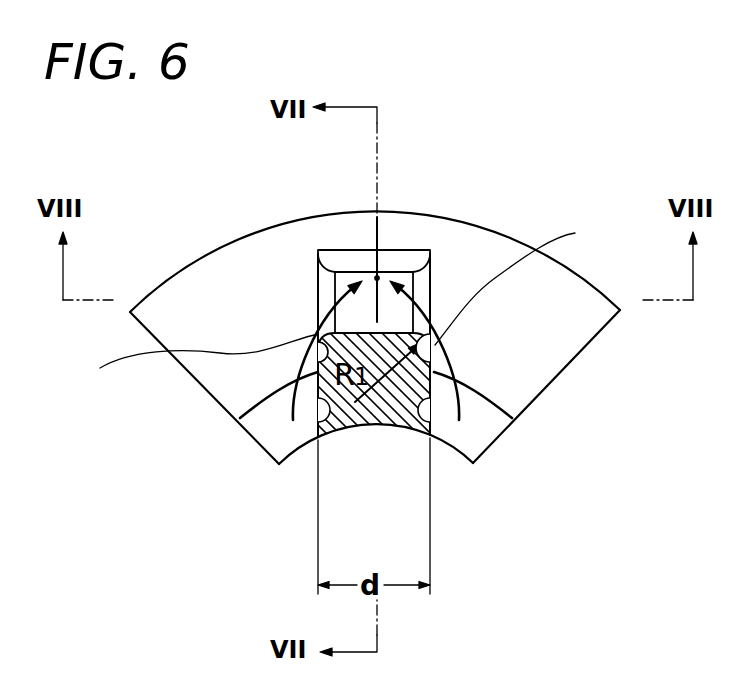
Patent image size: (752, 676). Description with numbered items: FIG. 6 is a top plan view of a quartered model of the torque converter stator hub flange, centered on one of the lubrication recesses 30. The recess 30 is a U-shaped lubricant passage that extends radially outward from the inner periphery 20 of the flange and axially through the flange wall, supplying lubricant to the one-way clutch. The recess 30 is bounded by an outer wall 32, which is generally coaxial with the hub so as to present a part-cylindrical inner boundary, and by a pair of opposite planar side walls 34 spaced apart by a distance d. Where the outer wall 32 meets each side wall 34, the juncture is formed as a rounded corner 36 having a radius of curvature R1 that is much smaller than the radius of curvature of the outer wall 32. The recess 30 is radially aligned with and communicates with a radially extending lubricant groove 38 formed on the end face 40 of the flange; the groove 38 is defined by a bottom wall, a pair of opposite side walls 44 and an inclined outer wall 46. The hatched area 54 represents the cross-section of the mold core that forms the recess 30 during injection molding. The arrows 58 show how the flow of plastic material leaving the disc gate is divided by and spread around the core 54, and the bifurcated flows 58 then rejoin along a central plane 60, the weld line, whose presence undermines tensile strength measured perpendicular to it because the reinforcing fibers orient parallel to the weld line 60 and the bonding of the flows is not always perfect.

The inner periphery 20 is at (297, 442).
The recess 30 is at (381, 435).
The outer wall 32 is at (336, 272).
The side walls 34 is at (318, 420).
The rounded corner 36 is at (300, 372).
The lubricant groove 38 is at (422, 284).
The end face 40 is at (583, 330).
The side walls 44 is at (317, 287).
The inclined outer wall 46 is at (397, 252).
The core 54 is at (333, 430).
The arrows 58 is at (338, 296).
The central plane 60 is at (377, 217).